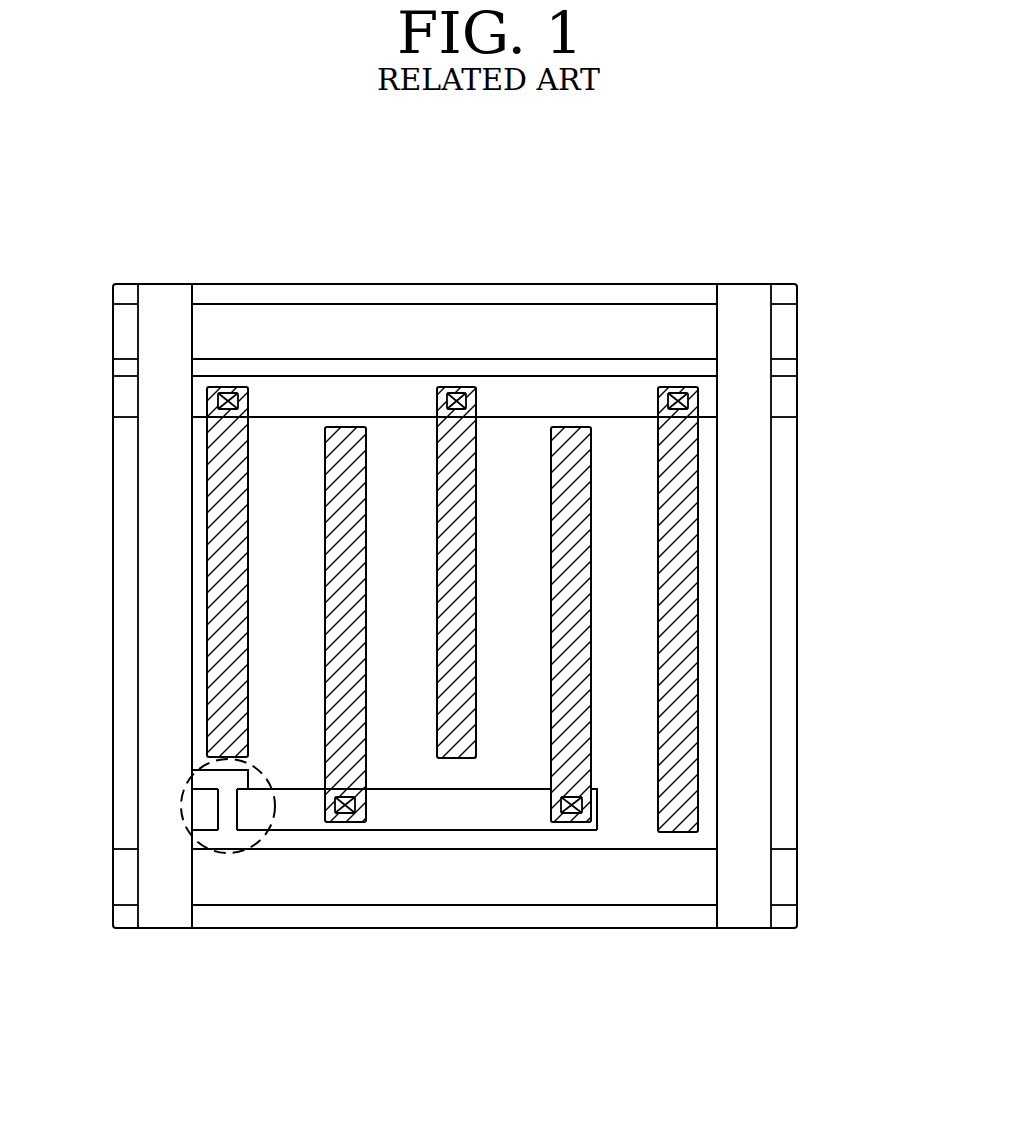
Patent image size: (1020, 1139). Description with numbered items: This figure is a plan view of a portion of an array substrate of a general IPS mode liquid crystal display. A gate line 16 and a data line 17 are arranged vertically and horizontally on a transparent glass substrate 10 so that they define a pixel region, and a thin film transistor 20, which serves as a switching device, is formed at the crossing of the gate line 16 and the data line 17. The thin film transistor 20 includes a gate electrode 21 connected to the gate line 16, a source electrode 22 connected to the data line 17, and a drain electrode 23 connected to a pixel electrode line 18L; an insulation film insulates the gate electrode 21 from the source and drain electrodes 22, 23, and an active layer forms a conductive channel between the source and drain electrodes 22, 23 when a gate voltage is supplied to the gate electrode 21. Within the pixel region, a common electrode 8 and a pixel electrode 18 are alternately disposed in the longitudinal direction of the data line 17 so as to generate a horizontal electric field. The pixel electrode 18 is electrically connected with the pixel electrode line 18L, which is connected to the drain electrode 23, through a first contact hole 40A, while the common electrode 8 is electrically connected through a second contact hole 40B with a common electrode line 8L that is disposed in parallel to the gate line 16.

The transparent glass substrate 10 is at (812, 301).
The common electrode 8 is at (690, 715).
The common electrode line 8L is at (788, 400).
The gate line 16 is at (655, 885).
The data line 17 is at (750, 638).
The pixel electrode 18 is at (575, 565).
The pixel electrode line 18L is at (430, 810).
The thin film transistor 20 is at (168, 801).
The gate electrode 21 is at (210, 772).
The source electrode 22 is at (202, 817).
The drain electrode 23 is at (250, 815).
The first contact hole 40A is at (572, 813).
The second contact hole 40B is at (453, 397).